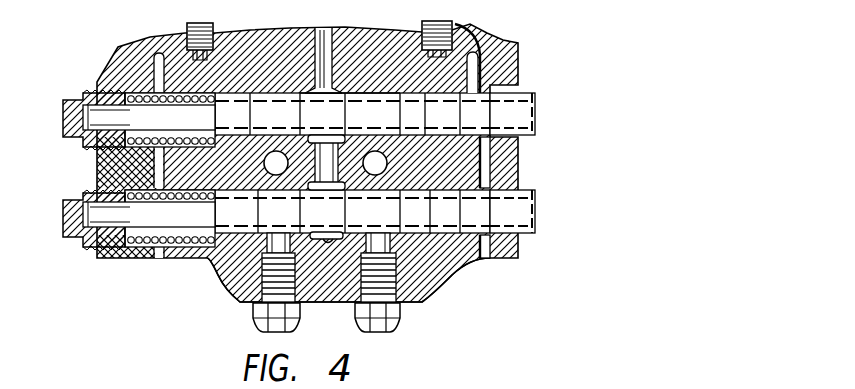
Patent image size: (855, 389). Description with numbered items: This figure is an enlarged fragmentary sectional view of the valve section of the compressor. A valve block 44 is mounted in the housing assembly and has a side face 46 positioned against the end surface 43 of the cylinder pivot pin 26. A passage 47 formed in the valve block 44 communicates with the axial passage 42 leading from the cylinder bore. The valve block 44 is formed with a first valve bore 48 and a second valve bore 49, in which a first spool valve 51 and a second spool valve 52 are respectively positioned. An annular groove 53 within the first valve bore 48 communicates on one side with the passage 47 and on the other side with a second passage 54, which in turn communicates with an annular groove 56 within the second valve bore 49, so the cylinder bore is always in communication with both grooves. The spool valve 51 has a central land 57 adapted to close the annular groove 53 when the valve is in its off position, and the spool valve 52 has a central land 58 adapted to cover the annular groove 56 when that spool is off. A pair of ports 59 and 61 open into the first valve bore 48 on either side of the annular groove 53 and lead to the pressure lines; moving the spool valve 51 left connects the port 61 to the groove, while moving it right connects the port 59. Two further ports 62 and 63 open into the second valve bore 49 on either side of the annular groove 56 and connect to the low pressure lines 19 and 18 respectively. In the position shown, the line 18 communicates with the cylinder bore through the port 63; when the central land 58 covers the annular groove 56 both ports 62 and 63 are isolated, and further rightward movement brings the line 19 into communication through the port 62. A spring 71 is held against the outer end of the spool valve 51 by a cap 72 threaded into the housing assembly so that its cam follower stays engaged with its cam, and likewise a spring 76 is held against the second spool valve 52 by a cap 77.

The low pressure line 18 is at (400, 323).
The low pressure line 19 is at (257, 326).
The cylinder pivot pin 26 is at (374, 33).
The axial passage 42 is at (328, 33).
The end surface 43 is at (284, 58).
The valve block 44 is at (208, 261).
The side face 46 is at (386, 60).
The passage 47 is at (318, 76).
The first valve bore 48 is at (468, 96).
The second valve bore 49 is at (418, 190).
The first spool valve 51 is at (522, 94).
The second spool valve 52 is at (529, 191).
The annular groove 53 is at (342, 93).
The second passage 54 is at (320, 153).
The annular groove 56 is at (328, 244).
The central land 57 is at (337, 123).
The central land 58 is at (292, 220).
The port 59 is at (263, 166).
The port 61 is at (387, 166).
The port 62 is at (264, 248).
The port 63 is at (391, 249).
The spring 71 is at (192, 138).
The cap 72 is at (66, 121).
The spring 76 is at (141, 243).
The cap 77 is at (68, 233).